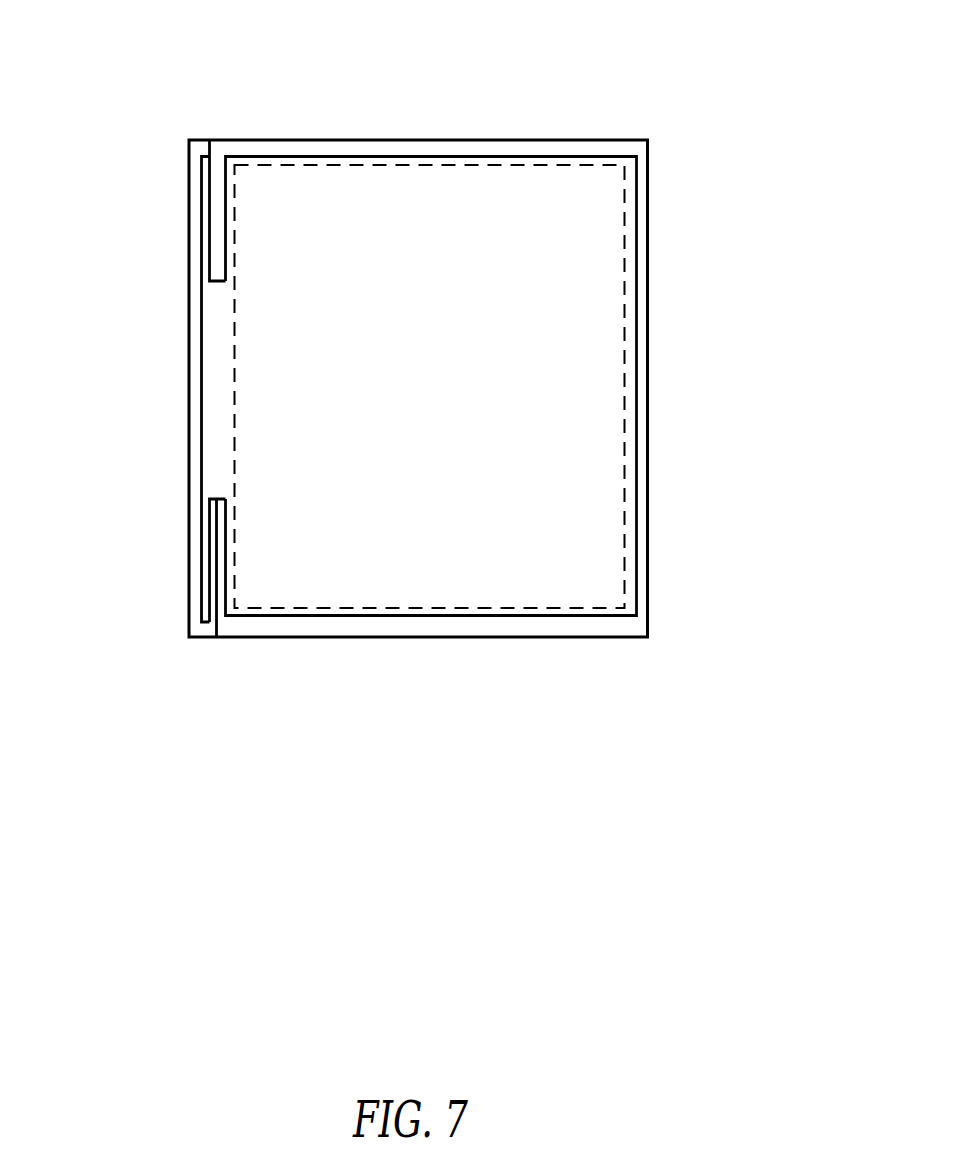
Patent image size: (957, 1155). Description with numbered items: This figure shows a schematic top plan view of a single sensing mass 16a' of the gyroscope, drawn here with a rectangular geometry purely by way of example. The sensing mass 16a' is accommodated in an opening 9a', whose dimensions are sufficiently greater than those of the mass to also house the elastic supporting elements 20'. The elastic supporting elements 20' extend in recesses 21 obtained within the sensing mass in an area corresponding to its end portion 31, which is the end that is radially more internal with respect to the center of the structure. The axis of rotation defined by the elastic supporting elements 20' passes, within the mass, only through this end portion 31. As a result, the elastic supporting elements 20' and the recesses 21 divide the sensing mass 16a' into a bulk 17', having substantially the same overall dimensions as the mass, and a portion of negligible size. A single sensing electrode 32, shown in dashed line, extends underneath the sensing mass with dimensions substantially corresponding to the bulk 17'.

The opening 9a' is at (595, 110).
The sensing mass 16a' is at (500, 388).
The bulk 17' is at (431, 337).
The elastic supporting elements 20' is at (274, 386).
The recesses 21 is at (224, 270).
The end portion 31 is at (222, 405).
The sensing electrode 32 is at (626, 452).